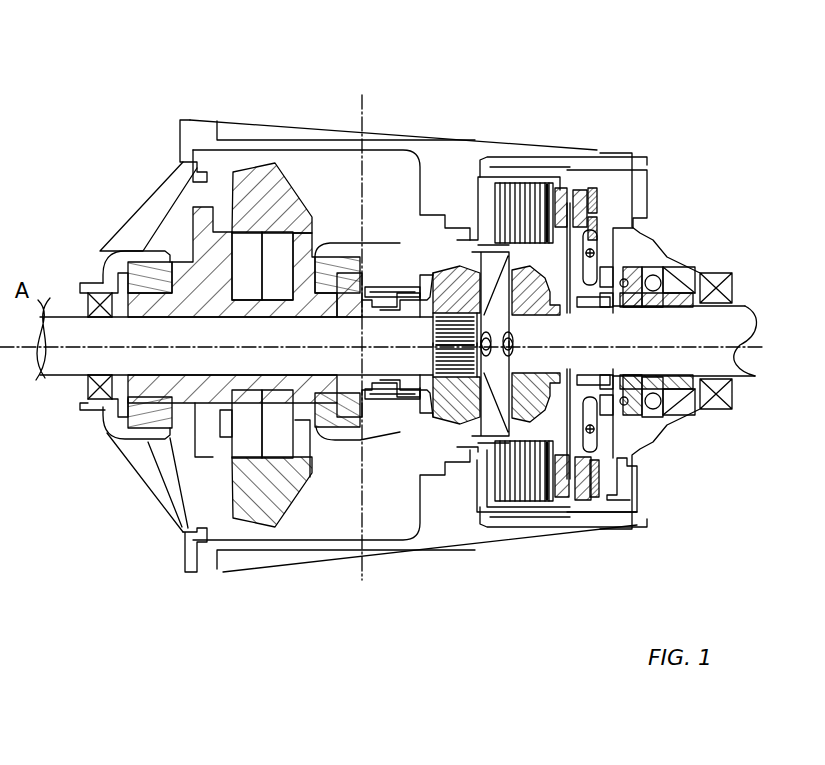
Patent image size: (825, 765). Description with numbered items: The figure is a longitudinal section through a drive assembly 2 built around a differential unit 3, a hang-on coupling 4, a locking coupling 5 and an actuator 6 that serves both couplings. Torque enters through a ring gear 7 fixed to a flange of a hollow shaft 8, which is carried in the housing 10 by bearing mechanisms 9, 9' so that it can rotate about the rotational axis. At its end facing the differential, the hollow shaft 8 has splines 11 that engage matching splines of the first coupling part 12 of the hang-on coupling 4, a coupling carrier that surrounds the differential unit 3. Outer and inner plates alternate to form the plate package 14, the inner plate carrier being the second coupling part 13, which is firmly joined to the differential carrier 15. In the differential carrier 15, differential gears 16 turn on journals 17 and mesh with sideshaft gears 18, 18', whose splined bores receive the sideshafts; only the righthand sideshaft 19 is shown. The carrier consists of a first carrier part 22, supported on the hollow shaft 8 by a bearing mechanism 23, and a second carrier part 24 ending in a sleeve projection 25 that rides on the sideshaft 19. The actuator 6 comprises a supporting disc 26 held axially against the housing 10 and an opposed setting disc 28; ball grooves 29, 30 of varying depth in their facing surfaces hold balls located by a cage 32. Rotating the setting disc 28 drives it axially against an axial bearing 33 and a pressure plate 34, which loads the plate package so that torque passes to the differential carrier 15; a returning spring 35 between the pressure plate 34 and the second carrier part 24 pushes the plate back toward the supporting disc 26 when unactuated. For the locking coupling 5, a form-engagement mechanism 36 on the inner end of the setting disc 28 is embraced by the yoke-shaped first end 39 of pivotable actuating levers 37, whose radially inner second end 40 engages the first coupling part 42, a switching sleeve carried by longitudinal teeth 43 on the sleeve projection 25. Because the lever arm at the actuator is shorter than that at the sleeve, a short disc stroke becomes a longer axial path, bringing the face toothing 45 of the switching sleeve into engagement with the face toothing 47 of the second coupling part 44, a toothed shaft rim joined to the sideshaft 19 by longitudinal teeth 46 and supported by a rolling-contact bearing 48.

The drive assembly 2 is at (131, 99).
The differential unit 3 is at (453, 236).
The hang-on coupling 4 is at (527, 158).
The locking coupling 5 is at (630, 240).
The actuator 6 is at (597, 155).
The ring gear 7 is at (262, 188).
The hollow shaft 8 is at (200, 293).
The bearing mechanism 9 is at (146, 300).
The bearing mechanism 9' is at (357, 306).
The housing 10 is at (116, 256).
The splines 11 is at (397, 350).
The first coupling part 12 is at (490, 200).
The second coupling part 13 is at (530, 257).
The plate package 14 is at (502, 200).
The differential carrier 15 is at (527, 457).
The differential gear 16 is at (545, 507).
The journal 17 is at (493, 423).
The sideshaft gear 18 is at (516, 344).
The sideshaft gear 18' is at (433, 434).
The sideshaft 19 is at (742, 322).
The first carrier part 22 is at (447, 305).
The bearing mechanism 23 is at (390, 297).
The second carrier part 24 is at (566, 302).
The sleeve projection 25 is at (586, 304).
The supporting disc 26 is at (593, 215).
The setting disc 28 is at (582, 185).
The ball groove 29 is at (600, 212).
The ball groove 30 is at (593, 213).
The cage 32 is at (600, 500).
The axial bearing 33 is at (598, 493).
The pressure plate 34 is at (578, 483).
The returning spring 35 is at (560, 480).
The form-engagement mechanism 36 is at (603, 468).
The actuating lever 37 is at (600, 437).
The first end 39 is at (610, 447).
The second end 40 is at (622, 418).
The first coupling part 42 is at (593, 386).
The longitudinal teeth 43 is at (612, 304).
The second coupling part 44 is at (643, 304).
The face toothing 45 is at (607, 273).
The longitudinal teeth 46 is at (656, 305).
The face toothing 47 is at (624, 280).
The rolling-contact bearing 48 is at (662, 401).